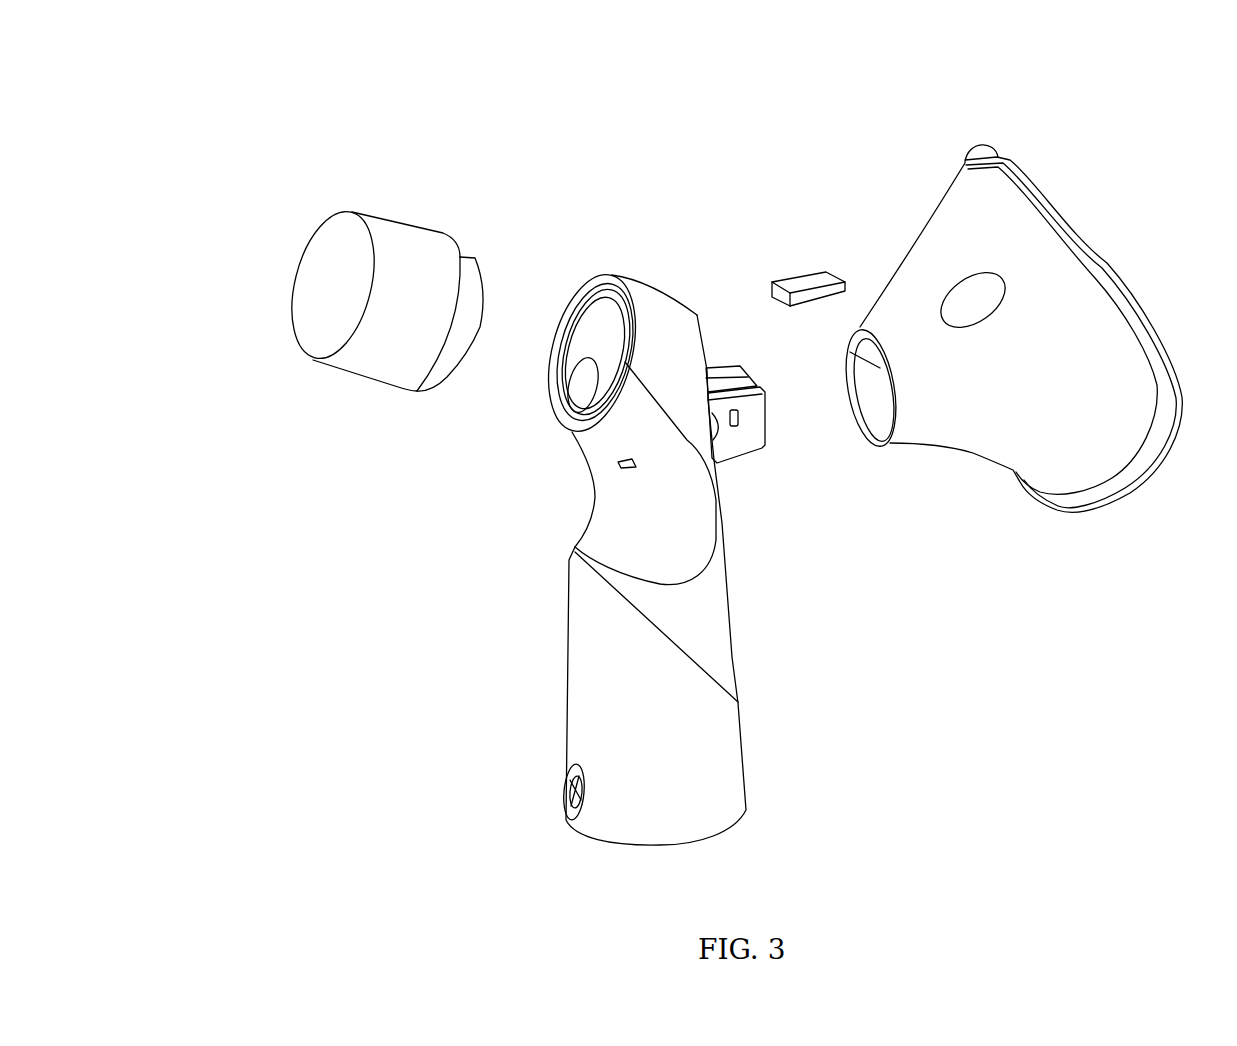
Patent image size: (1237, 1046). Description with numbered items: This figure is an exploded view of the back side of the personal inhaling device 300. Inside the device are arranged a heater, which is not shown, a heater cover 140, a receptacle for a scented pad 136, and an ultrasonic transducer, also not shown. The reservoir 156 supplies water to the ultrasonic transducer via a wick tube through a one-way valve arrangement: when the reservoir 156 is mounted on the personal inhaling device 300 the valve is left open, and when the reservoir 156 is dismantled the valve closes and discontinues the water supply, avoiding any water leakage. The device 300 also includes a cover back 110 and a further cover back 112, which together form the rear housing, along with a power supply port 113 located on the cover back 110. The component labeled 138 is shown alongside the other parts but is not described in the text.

The personal inhaling device 300 is at (253, 158).
The reservoir 156 is at (326, 296).
The cover back 110 is at (586, 732).
The power supply port 113 is at (578, 790).
The cover back 112 is at (622, 527).
The heater cover 140 is at (741, 367).
The receptacle for a scented pad 136 is at (792, 275).
The mask 138 is at (1086, 312).